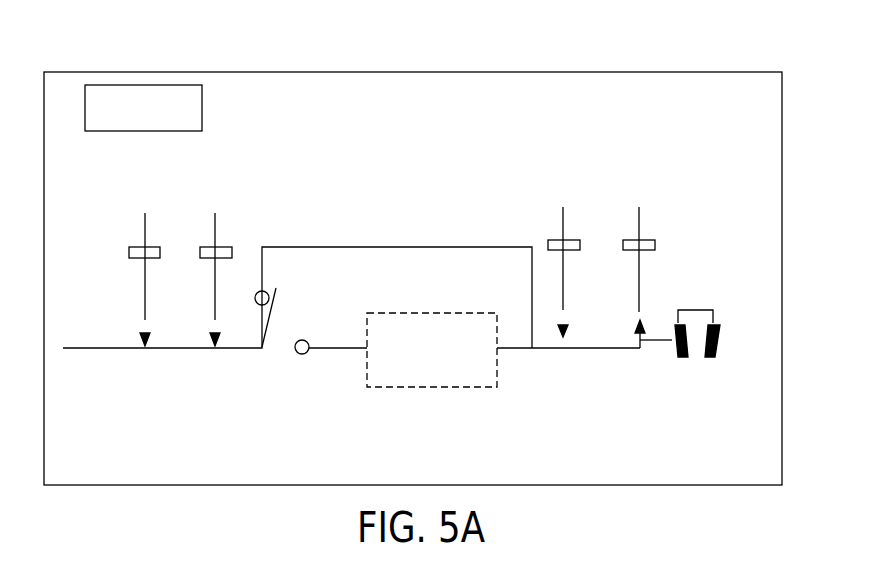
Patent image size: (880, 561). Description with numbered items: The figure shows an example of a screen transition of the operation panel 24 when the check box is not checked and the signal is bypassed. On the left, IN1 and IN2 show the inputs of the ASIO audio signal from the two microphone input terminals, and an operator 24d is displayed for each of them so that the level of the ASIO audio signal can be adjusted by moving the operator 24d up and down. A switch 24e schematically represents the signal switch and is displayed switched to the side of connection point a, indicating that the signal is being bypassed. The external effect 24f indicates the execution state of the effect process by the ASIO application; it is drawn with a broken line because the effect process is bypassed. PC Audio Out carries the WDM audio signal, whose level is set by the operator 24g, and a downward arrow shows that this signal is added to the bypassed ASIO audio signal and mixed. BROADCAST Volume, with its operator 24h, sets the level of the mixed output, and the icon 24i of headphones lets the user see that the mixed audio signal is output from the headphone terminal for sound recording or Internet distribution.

The operation panel 24 is at (660, 72).
The operator 24d is at (129, 254).
The switch 24e is at (280, 358).
The external effect 24f is at (450, 387).
The operator 24g is at (548, 242).
The operator 24h is at (655, 248).
The icon of headphones 24i is at (697, 362).